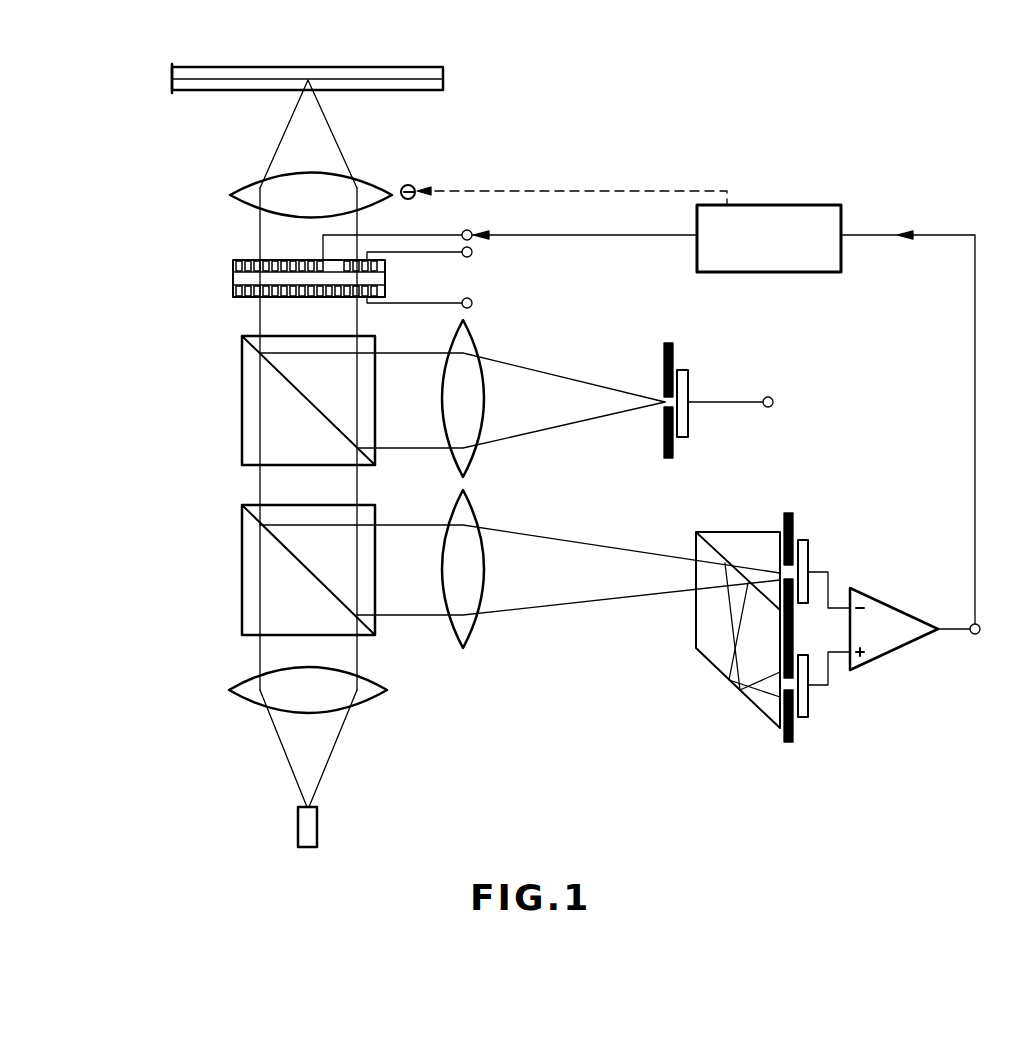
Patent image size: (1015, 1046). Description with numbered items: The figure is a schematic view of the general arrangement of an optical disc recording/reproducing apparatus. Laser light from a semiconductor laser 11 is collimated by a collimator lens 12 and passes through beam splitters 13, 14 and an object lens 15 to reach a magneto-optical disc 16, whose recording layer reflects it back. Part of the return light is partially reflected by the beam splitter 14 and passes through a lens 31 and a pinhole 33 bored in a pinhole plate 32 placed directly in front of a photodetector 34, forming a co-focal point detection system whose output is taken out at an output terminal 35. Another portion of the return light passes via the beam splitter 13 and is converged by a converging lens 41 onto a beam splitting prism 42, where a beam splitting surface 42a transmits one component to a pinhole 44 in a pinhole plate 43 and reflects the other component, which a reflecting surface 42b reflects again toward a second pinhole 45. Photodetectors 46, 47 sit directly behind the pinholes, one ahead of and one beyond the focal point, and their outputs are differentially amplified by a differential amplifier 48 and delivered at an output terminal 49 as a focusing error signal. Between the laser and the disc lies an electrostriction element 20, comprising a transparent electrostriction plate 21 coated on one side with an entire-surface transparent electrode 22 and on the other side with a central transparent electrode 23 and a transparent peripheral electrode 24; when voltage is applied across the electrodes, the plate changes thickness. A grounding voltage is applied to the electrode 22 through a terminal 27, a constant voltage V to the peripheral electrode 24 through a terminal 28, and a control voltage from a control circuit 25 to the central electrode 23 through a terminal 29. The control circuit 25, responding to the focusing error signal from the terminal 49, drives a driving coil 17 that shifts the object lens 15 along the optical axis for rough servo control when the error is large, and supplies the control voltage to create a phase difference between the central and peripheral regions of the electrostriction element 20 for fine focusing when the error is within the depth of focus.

The semiconductor laser 11 is at (317, 825).
The collimator lens 12 is at (365, 708).
The beam splitter 13 is at (242, 580).
The beam splitter 14 is at (242, 420).
The object lens 15 is at (372, 186).
The magneto-optical disc 16 is at (443, 72).
The driving coil 17 is at (413, 185).
The electrostriction element 20 is at (240, 264).
The electrostriction plate 21 is at (233, 278).
The transparent electrode 22 is at (240, 297).
The central transparent electrode 23 is at (300, 262).
The transparent peripheral electrode 24 is at (245, 262).
The control circuit 25 is at (800, 205).
The terminal 27 is at (470, 298).
The terminal 28 is at (468, 257).
The terminal 29 is at (472, 232).
The lens 31 is at (480, 336).
The pinhole plate 32 is at (670, 343).
The pinhole 33 is at (662, 406).
The photodetector 34 is at (688, 372).
The output terminal 35 is at (773, 402).
The converging lens 41 is at (480, 506).
The beam splitting prism 42 is at (719, 607).
The beam splitting surface 42a is at (715, 545).
The reflecting surface 42b is at (715, 670).
The pinhole plate 43 is at (790, 513).
The pinhole 44 is at (808, 560).
The pinhole 45 is at (812, 700).
The photodetector 46 is at (828, 590).
The photodetector 47 is at (830, 675).
The differential amplifier 48 is at (905, 625).
The output terminal 49 is at (975, 640).